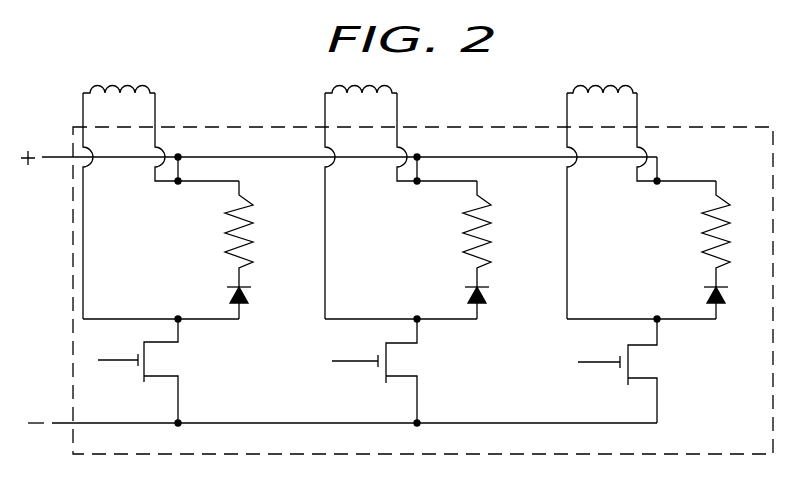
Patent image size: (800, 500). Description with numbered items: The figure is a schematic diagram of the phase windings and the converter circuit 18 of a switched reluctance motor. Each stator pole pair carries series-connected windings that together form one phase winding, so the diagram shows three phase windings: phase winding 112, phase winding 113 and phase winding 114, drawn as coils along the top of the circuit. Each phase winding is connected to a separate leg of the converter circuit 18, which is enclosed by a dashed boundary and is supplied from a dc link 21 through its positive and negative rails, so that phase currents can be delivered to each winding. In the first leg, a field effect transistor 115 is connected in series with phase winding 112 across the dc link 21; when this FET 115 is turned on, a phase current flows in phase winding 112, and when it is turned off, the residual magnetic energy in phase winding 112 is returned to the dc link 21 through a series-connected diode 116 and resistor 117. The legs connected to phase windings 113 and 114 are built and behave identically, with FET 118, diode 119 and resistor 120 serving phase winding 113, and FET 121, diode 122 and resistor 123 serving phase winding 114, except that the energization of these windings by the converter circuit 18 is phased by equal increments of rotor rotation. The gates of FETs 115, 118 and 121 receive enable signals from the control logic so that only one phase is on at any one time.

The converter circuit 18 is at (352, 456).
The dc link 21 is at (337, 287).
The phase winding 112 is at (112, 88).
The phase winding 113 is at (352, 90).
The phase winding 114 is at (590, 88).
The field effect transistor 115 is at (160, 378).
The diode 116 is at (245, 302).
The resistor 117 is at (253, 222).
The field effect transistor 118 is at (400, 378).
The diode 119 is at (485, 302).
The resistor 120 is at (490, 222).
The field effect transistor 121 is at (645, 380).
The diode 122 is at (720, 306).
The resistor 123 is at (730, 212).